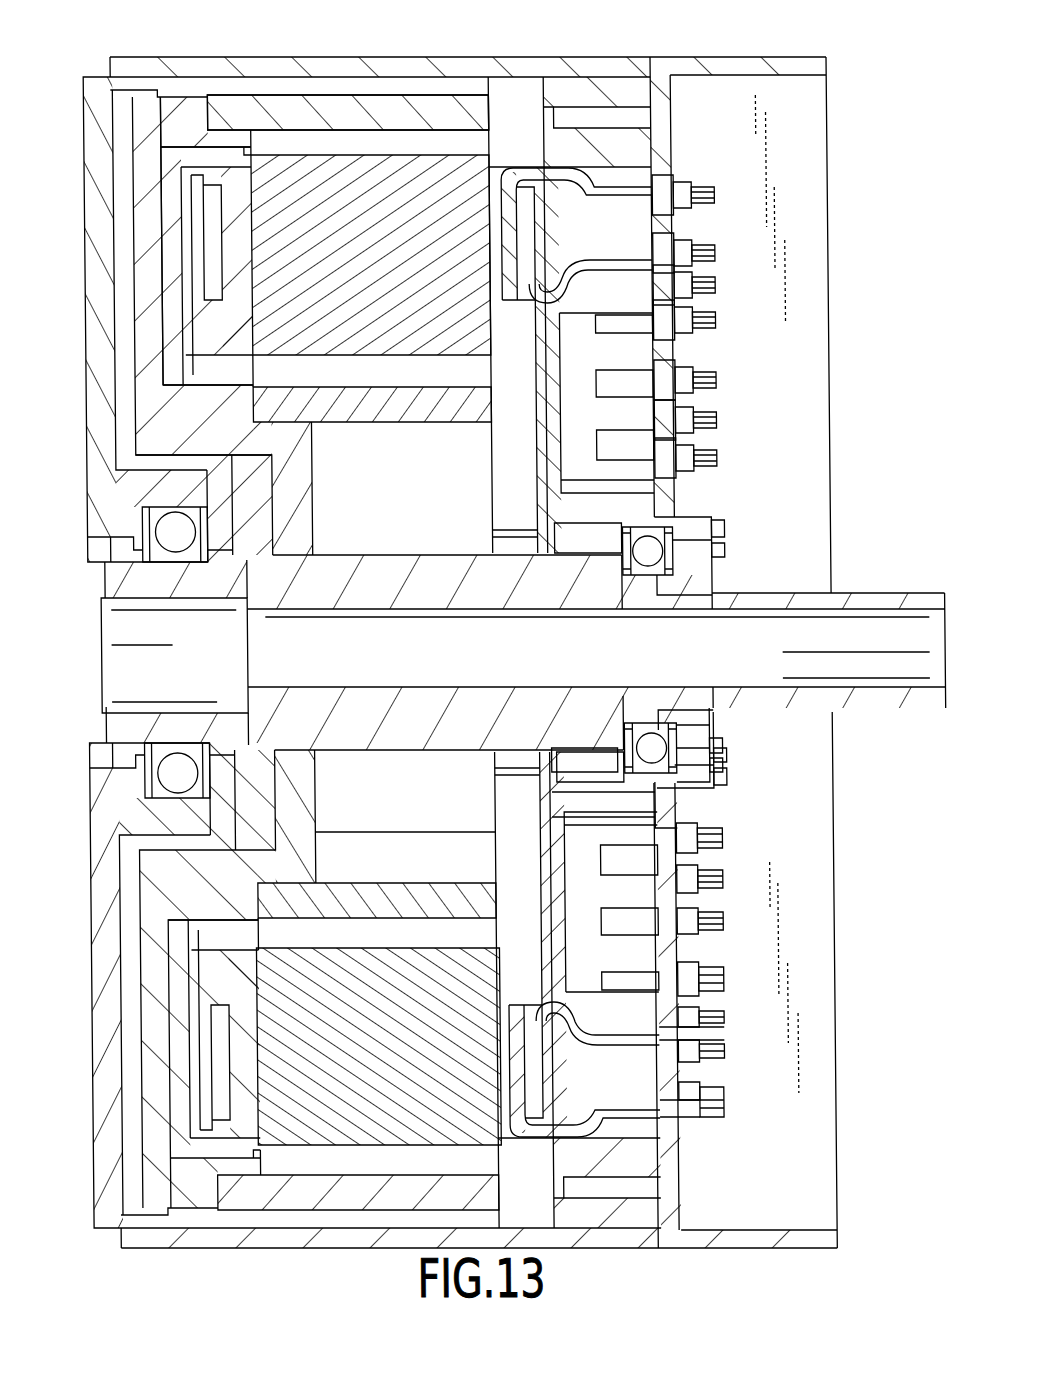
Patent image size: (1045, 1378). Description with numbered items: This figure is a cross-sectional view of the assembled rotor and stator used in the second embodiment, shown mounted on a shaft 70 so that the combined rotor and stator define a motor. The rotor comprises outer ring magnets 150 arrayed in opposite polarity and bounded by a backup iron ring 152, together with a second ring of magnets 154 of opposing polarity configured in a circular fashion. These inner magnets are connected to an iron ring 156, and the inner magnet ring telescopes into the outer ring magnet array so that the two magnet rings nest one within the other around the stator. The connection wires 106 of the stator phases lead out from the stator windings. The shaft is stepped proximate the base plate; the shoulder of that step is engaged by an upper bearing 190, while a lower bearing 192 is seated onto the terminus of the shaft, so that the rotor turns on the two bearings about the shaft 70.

The shaft 70 is at (883, 710).
The connection wires 106 is at (705, 1093).
The outer ring magnets 150 is at (243, 150).
The backup iron ring 152 is at (222, 104).
The second ring of magnets 154 is at (242, 375).
The iron ring 156 is at (214, 424).
The upper bearing 190 is at (646, 752).
The lower bearing 192 is at (136, 796).